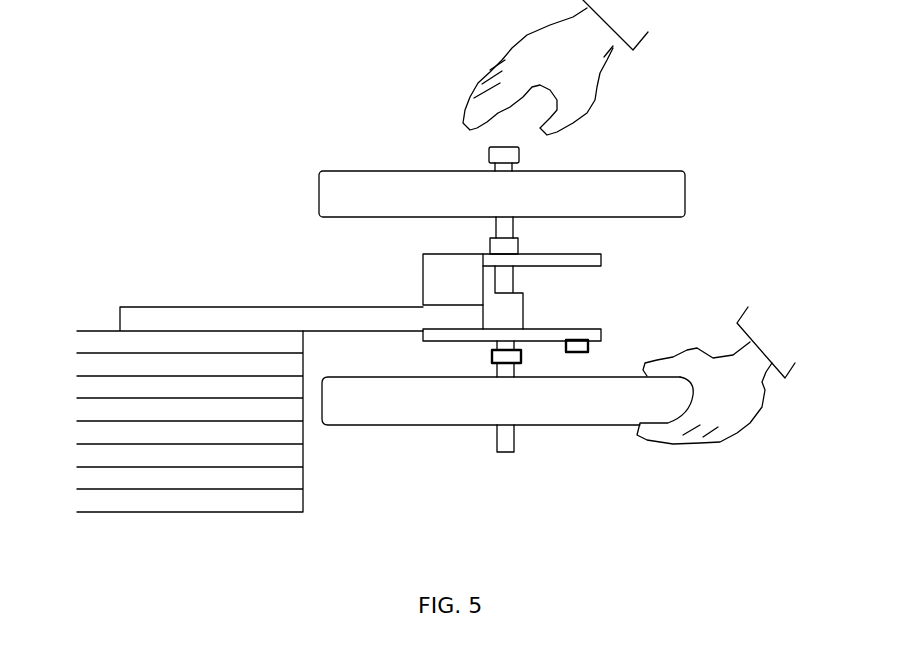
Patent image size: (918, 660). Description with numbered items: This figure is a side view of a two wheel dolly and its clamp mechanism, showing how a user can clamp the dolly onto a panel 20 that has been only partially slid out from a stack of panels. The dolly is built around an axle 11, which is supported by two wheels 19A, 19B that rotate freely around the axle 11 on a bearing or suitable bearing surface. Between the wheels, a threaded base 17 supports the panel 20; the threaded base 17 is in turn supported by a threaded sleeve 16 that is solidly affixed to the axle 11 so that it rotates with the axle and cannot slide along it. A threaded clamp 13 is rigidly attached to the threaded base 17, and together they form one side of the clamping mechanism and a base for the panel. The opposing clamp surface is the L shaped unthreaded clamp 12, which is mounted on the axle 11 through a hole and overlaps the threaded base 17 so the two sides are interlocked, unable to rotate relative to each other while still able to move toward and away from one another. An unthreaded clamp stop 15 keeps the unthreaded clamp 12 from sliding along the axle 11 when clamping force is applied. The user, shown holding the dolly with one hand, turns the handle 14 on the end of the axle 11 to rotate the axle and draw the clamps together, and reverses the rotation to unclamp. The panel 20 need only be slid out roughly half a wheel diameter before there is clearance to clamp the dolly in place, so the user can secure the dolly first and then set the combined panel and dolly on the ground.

The axle 11 is at (522, 445).
The unthreaded clamp 12 is at (413, 273).
The threaded clamp 13 is at (410, 337).
The handle 14 is at (472, 152).
The unthreaded clamp stop 15 is at (483, 244).
The threaded sleeve 16 is at (483, 346).
The threaded base 17 is at (533, 309).
The wheel 19A is at (378, 428).
The wheel 19B is at (303, 163).
The panel 20 is at (188, 298).